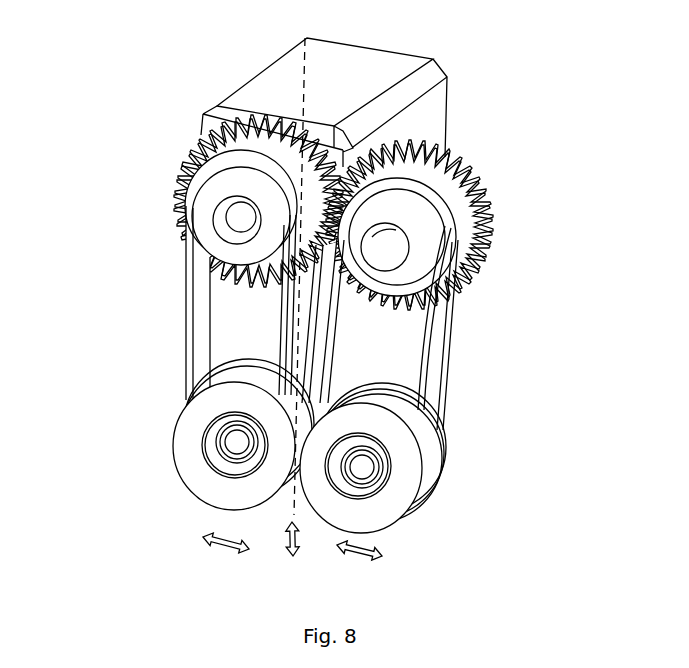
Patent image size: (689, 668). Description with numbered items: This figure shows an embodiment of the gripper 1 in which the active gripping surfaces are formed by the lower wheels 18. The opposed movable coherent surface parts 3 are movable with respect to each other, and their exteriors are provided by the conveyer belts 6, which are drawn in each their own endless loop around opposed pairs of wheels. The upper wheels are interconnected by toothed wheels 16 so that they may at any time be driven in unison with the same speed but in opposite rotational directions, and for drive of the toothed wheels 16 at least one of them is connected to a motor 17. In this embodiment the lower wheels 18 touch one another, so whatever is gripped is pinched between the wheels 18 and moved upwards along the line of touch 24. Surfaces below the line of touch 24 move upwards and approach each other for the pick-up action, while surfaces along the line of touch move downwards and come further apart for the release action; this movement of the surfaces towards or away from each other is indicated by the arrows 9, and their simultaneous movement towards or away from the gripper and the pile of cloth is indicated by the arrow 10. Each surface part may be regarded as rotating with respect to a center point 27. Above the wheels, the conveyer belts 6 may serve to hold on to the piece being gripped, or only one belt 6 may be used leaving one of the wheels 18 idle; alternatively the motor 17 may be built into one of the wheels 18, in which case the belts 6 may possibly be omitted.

The device 1 is at (521, 203).
The surface parts 3 is at (305, 507).
The conveyer belts 6 is at (186, 298).
The arrows 9 is at (217, 547).
The arrow 10 is at (292, 555).
The toothed wheels 16 is at (200, 143).
The motor 17 is at (287, 90).
The lower wheels 18 is at (193, 469).
The line of touch 24 is at (303, 108).
The center point 27 is at (237, 442).